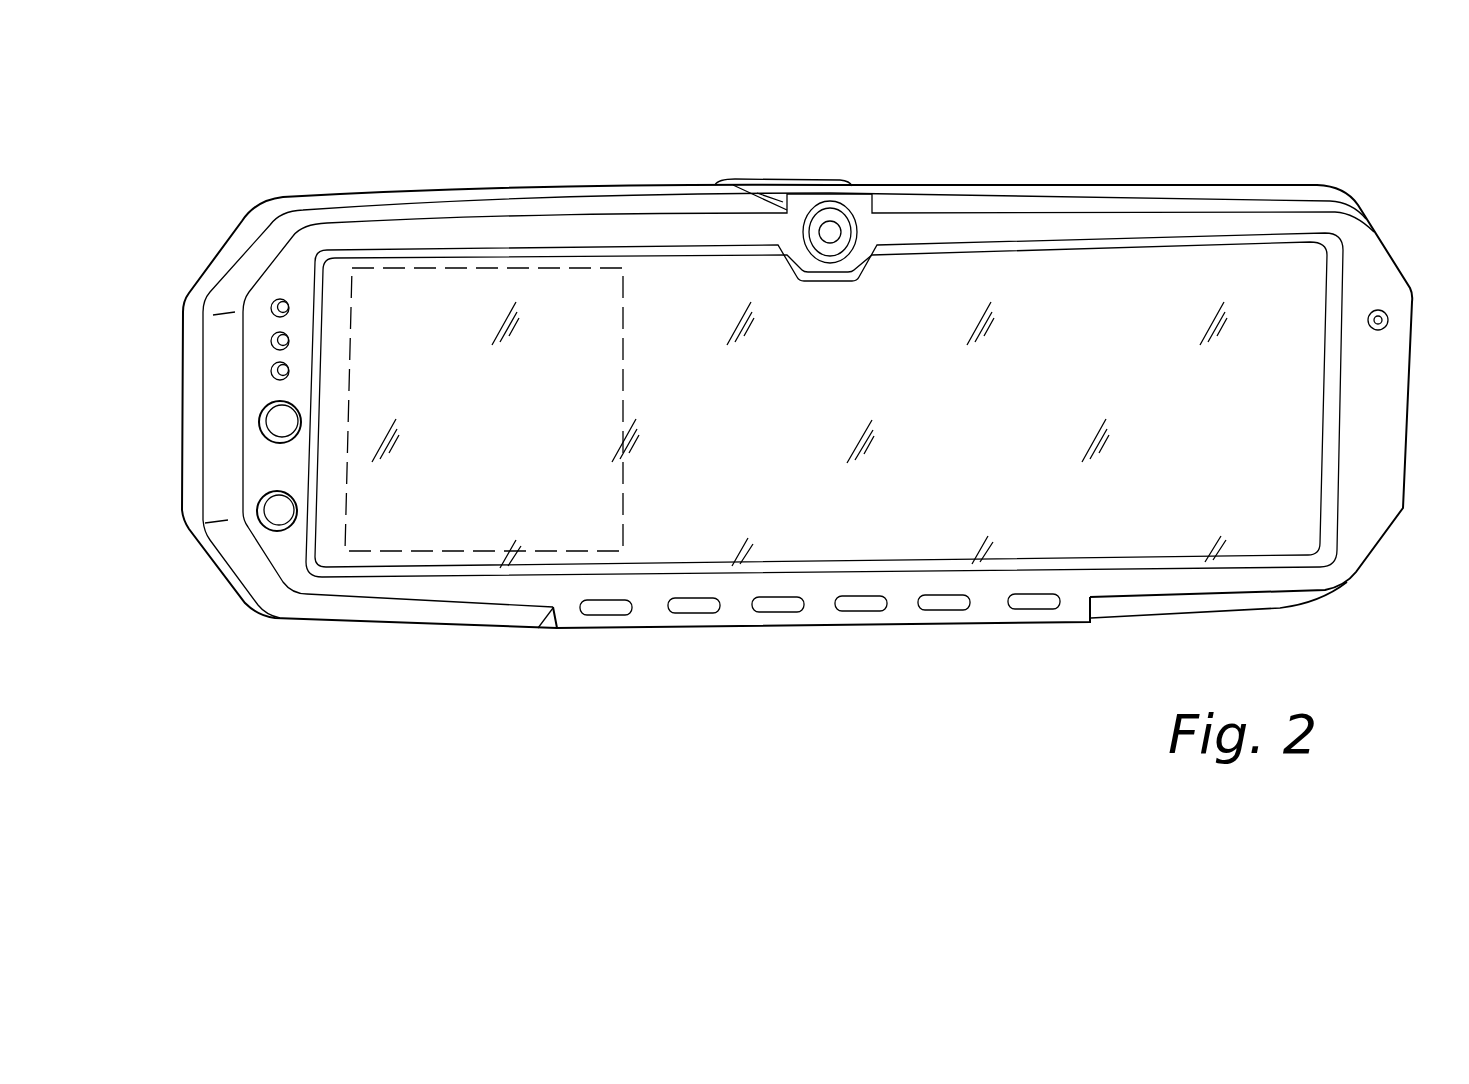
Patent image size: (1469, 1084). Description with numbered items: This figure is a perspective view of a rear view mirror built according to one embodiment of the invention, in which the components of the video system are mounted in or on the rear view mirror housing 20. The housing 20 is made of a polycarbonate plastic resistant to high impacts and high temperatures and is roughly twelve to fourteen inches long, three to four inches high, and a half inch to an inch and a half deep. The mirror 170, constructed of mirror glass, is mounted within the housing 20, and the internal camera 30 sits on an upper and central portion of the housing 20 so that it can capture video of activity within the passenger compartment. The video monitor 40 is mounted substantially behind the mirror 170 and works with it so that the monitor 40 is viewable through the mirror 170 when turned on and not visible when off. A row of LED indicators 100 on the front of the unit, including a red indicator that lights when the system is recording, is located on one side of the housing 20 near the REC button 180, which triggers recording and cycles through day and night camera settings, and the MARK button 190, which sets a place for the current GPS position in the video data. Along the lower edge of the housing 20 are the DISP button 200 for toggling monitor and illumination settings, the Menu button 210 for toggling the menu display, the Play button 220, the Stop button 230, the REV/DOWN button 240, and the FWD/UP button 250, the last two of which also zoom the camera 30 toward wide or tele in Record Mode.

The rear view mirror housing 20 is at (1408, 452).
The internal camera 30 is at (828, 182).
The video monitor 40 is at (354, 310).
The LED indicators 100 is at (234, 332).
The mirror 170 is at (770, 436).
The REC button 180 is at (258, 508).
The MARK button 190 is at (260, 423).
The DISP button 200 is at (612, 614).
The Menu button 210 is at (676, 613).
The Play button 220 is at (780, 612).
The Stop button 230 is at (858, 611).
The REV/DOWN button 240 is at (940, 610).
The FWD/UP button 250 is at (1048, 609).